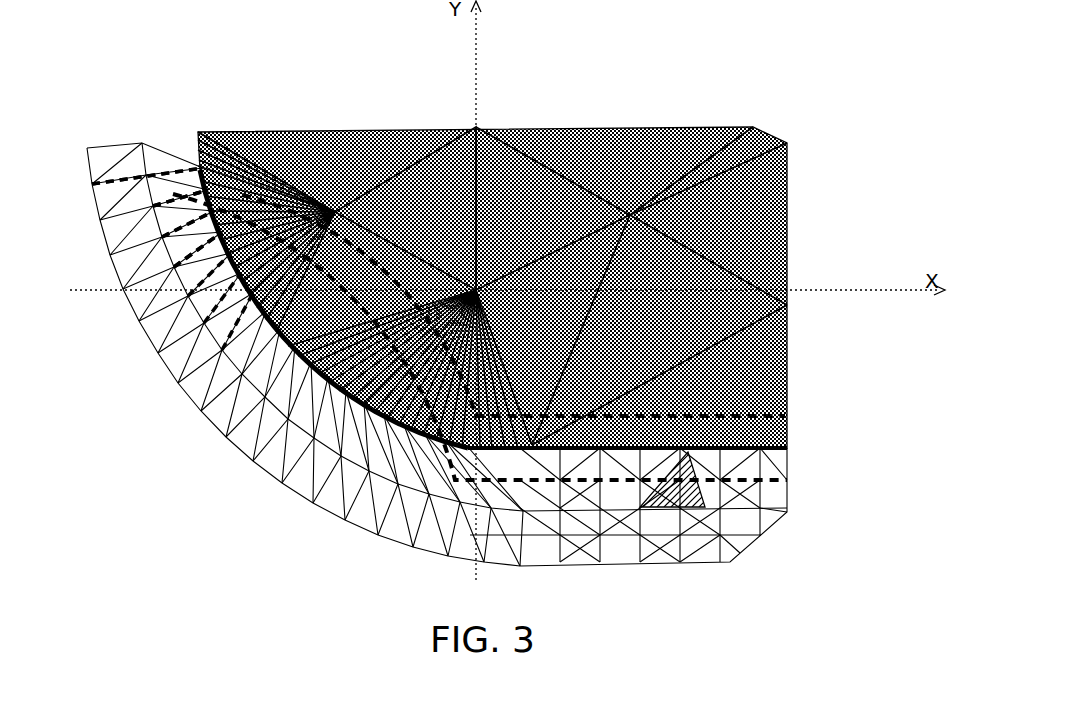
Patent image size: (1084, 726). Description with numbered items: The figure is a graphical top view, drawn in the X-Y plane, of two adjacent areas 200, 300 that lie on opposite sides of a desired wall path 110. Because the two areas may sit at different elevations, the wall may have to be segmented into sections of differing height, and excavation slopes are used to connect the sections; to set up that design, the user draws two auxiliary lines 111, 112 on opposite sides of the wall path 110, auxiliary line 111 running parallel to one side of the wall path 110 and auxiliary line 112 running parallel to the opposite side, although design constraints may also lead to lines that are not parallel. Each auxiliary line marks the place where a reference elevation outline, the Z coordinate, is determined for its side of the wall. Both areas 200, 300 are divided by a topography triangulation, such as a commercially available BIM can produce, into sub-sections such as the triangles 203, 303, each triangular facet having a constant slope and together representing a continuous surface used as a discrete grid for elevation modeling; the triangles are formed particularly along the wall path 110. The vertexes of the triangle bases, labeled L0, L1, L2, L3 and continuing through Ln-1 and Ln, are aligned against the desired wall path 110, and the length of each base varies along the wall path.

The area 300 is at (683, 127).
The triangle 303 is at (405, 208).
The auxiliary line 111 is at (262, 130).
The auxiliary line 112 is at (178, 165).
The wall path 110 is at (790, 418).
The area 200 is at (265, 477).
The triangle 203 is at (680, 497).
The vertex Ln is at (790, 466).
The vertex Ln-1 is at (790, 482).
The vertex L0 is at (150, 186).
The vertex L1 is at (150, 216).
The vertex L2 is at (150, 252).
The vertex L3 is at (152, 276).